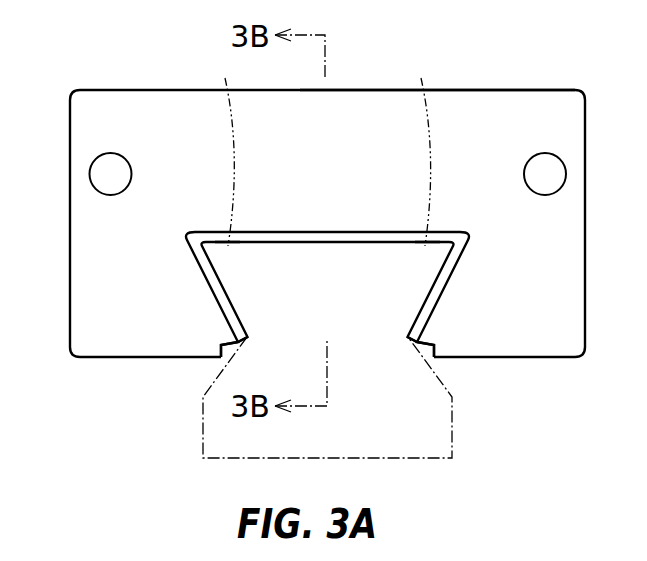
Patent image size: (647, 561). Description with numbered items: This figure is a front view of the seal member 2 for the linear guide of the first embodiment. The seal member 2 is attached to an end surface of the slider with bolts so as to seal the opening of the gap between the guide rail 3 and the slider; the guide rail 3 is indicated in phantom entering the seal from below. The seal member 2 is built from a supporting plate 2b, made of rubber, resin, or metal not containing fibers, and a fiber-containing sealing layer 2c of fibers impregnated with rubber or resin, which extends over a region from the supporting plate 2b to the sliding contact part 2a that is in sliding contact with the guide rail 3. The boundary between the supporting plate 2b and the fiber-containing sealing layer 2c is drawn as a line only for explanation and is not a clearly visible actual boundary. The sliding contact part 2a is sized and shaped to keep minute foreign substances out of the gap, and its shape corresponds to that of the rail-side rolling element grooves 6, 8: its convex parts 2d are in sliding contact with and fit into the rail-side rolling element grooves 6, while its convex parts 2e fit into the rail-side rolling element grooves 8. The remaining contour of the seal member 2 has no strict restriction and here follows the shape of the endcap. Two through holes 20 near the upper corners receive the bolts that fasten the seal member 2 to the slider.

The seal member 2 is at (146, 90).
The sliding contact part 2a is at (327, 243).
The supporting plate 2b is at (526, 89).
The fiber-containing sealing layer 2c is at (234, 306).
The convex parts 2d is at (251, 339).
The convex parts 2e is at (232, 247).
The guide rail 3 is at (453, 458).
The rail-side rolling element grooves 6 is at (238, 336).
The rail-side rolling element grooves 8 is at (322, 149).
The through holes 20 is at (100, 172).